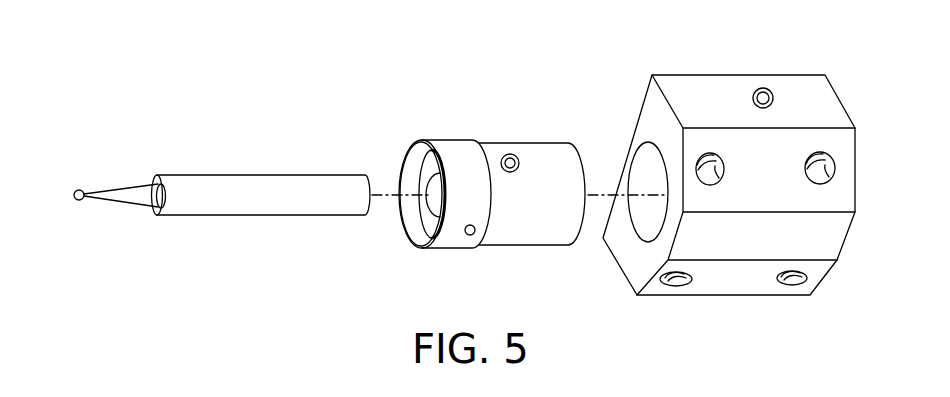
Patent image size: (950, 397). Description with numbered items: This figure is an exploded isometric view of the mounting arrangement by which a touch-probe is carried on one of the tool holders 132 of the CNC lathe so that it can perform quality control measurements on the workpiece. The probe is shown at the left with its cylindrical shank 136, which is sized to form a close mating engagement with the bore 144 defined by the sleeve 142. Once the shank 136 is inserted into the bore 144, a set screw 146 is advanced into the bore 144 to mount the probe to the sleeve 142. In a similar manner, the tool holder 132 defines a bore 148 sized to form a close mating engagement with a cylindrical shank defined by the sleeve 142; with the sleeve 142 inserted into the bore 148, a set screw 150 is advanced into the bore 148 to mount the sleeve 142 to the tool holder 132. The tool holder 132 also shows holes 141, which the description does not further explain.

The cylindrical shank 136 is at (247, 183).
The bore 144 is at (433, 190).
The sleeve 142 is at (537, 152).
The set screw 146 is at (519, 169).
The bore 148 is at (641, 162).
The set screw 150 is at (763, 88).
The front holes in block 141 is at (727, 165).
The tool holder 132 is at (807, 237).